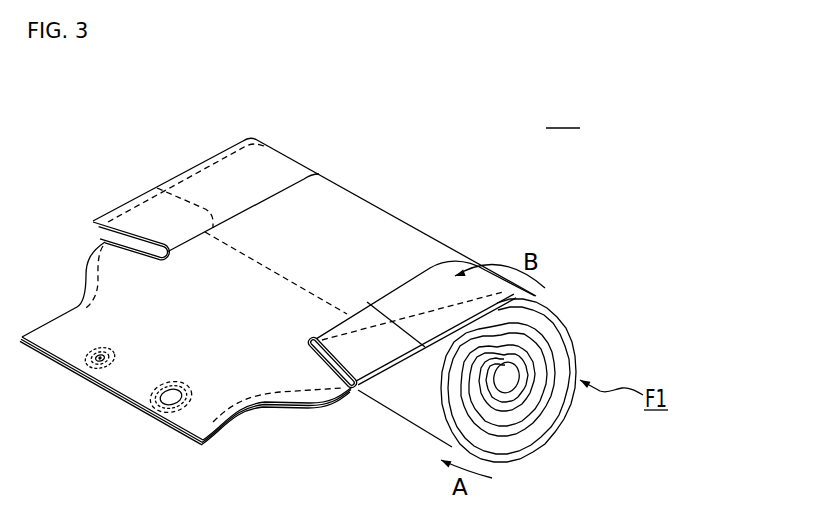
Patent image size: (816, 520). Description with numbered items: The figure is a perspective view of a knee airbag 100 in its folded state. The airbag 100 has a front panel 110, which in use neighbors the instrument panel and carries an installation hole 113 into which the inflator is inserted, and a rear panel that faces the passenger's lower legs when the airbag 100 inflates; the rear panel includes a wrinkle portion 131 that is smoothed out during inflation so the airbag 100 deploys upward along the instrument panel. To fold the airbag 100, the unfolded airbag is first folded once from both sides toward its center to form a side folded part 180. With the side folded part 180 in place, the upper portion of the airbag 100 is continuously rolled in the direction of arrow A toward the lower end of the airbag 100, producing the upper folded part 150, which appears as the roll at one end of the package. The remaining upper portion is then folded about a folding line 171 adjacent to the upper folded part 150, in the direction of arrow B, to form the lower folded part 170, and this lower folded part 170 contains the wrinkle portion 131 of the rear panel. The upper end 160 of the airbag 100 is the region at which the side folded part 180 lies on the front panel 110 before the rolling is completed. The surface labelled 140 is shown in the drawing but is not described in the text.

The airbag 100 is at (301, 274).
The front panel 110 is at (318, 400).
The installation hole 113 is at (150, 405).
The wrinkle portion 131 is at (270, 223).
The back cover 140 is at (72, 372).
The upper folded part 150 is at (560, 427).
The upper end 160 is at (519, 381).
The lower folded part 170 is at (391, 201).
The folding line 171 is at (540, 299).
The side folded part 180 is at (375, 347).